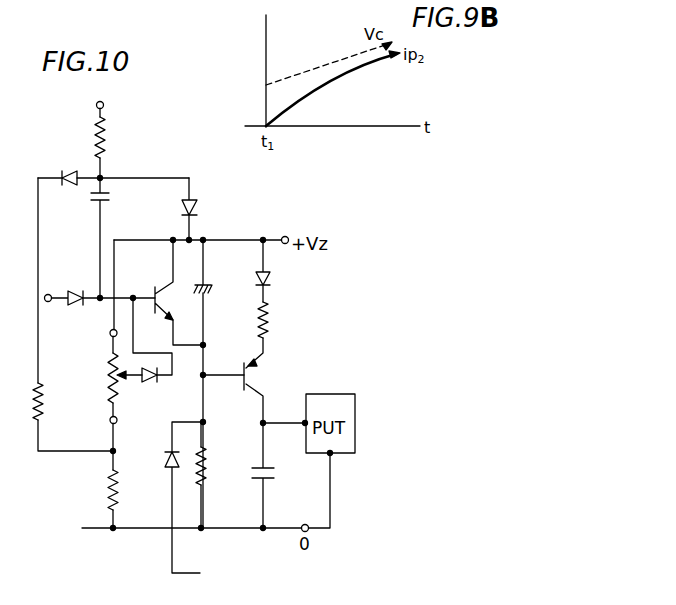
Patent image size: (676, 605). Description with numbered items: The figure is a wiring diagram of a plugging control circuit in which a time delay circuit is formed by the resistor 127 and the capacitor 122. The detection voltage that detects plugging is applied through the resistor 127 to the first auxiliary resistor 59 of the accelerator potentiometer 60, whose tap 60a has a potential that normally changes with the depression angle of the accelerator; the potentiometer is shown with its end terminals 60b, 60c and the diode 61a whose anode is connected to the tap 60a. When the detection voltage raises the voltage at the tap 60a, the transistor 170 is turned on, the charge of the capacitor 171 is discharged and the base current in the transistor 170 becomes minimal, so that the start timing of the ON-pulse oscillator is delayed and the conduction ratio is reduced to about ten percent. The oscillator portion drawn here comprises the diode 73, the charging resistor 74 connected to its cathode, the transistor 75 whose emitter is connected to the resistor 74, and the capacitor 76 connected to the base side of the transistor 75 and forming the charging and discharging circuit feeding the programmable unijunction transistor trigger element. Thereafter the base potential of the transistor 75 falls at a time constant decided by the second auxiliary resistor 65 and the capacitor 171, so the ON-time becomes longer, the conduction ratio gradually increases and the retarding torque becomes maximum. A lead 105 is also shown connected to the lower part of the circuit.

The resistor 127 is at (107, 145).
The capacitor 122 is at (110, 196).
The capacitor 171 is at (213, 290).
The transistor 170 is at (164, 300).
The diode 73 is at (271, 279).
The charging resistor 74 is at (270, 322).
The transistor 75 is at (256, 380).
The accelerator potentiometer 60 is at (106, 371).
The tap 60a is at (127, 381).
The terminal of variable resistor 60b is at (109, 333).
The terminal of variable resistor 60c is at (110, 420).
The diode 61a is at (150, 383).
The second auxiliary resistor 65 is at (207, 462).
The capacitor 76 is at (272, 477).
The first auxiliary resistor 59 is at (106, 490).
The terminal lead 105 is at (200, 504).